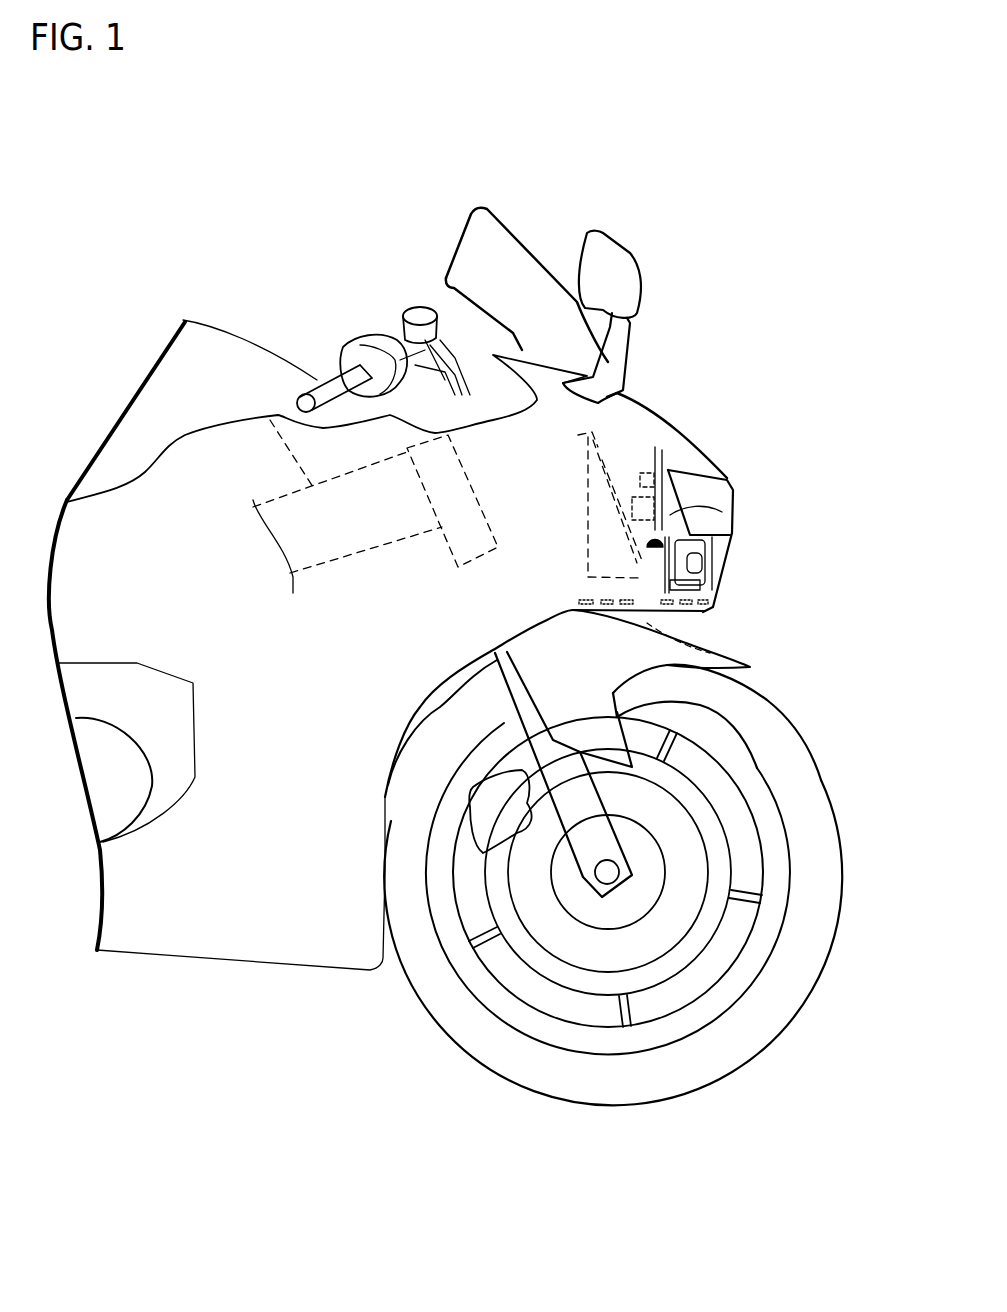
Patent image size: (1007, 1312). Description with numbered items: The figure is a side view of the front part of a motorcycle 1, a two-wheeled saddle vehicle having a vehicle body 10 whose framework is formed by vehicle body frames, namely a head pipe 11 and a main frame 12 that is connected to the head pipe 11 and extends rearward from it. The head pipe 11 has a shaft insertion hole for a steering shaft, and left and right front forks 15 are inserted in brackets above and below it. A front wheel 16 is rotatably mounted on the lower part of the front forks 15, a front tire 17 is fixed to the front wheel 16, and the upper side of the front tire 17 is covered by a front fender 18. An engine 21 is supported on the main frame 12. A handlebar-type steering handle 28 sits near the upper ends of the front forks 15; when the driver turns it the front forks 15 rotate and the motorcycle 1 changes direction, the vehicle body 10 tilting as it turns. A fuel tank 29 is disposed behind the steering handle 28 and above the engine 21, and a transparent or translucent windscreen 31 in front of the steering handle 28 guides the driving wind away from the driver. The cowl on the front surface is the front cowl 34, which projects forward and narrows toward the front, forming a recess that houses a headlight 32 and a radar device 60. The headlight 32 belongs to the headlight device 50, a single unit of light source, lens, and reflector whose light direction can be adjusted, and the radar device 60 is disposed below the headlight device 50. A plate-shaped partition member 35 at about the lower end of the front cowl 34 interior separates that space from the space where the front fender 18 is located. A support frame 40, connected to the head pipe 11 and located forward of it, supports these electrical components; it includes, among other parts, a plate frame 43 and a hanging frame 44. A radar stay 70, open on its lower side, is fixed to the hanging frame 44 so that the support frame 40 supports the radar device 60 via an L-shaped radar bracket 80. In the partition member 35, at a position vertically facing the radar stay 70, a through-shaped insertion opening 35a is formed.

The motorcycle 1 is at (74, 175).
The vehicle body 10 is at (110, 1028).
The head pipe 11 is at (443, 547).
The main frame 12 is at (264, 410).
The front forks 15 is at (590, 852).
The front wheel 16 is at (722, 997).
The front tire 17 is at (653, 1100).
The front fender 18 is at (643, 662).
The engine 21 is at (102, 782).
The steering handle 28 is at (330, 388).
The fuel tank 29 is at (203, 350).
The windscreen 31 is at (472, 238).
The headlight 32 is at (727, 487).
The front cowl 34 is at (628, 492).
The partition member 35 is at (693, 622).
The insertion opening 35a is at (650, 630).
The support frame 40 is at (614, 426).
The plate frame 43 is at (580, 518).
The hanging frame 44 is at (570, 453).
The headlight device 50 is at (703, 433).
The radar device 60 is at (727, 573).
The radar stay 70 is at (660, 587).
The radar bracket 80 is at (740, 518).